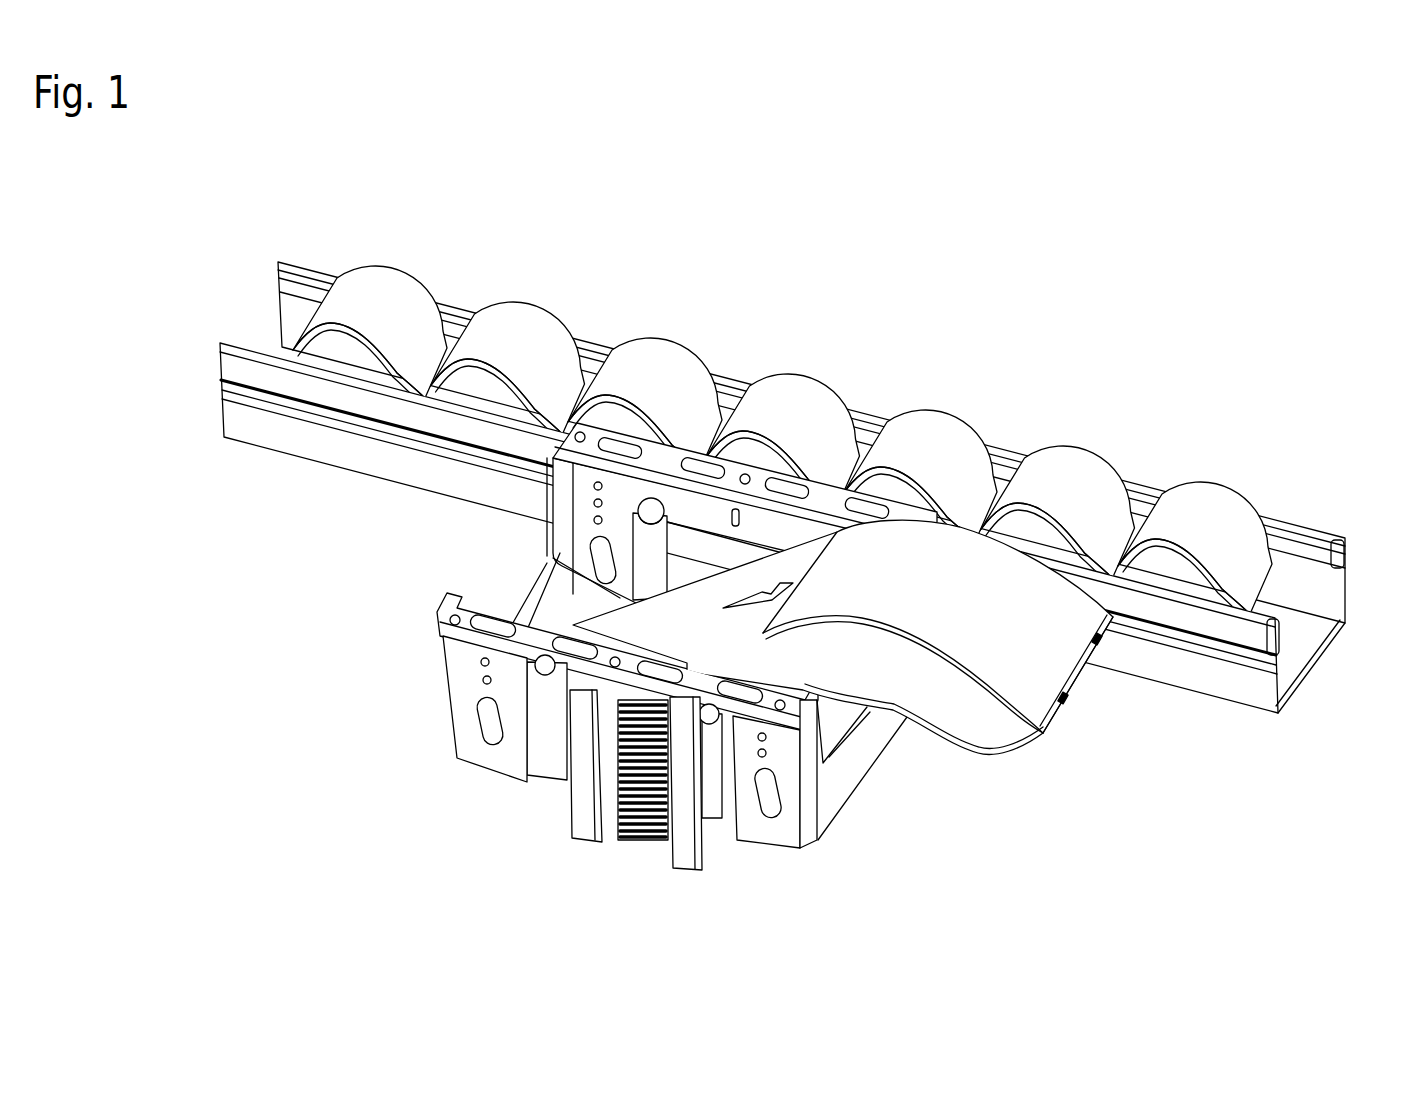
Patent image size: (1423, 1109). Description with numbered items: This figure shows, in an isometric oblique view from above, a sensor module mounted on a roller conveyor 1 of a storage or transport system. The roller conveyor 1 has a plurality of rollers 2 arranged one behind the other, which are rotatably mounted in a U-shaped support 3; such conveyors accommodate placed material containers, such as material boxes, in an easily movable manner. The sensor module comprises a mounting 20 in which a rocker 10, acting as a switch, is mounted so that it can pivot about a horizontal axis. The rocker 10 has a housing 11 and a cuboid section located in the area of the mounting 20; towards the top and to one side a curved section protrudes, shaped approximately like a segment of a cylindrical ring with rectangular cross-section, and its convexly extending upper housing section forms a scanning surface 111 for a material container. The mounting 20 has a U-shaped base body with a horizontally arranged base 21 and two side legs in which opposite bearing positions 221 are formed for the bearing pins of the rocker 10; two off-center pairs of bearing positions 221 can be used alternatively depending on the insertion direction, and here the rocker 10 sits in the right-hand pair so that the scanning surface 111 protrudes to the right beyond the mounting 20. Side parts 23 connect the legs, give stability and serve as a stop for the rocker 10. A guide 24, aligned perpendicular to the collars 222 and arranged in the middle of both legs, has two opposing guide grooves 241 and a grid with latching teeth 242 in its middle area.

The roller conveyor 1 is at (1362, 503).
The rollers 2 is at (511, 343).
The U-shaped support 3 is at (1303, 653).
The rocker 10 is at (868, 703).
The housing 11 is at (927, 687).
The scanning surface 111 is at (1037, 645).
The mounting 20 is at (751, 627).
The base 21 is at (840, 850).
The side parts 23 is at (543, 607).
The guide 24 is at (598, 836).
The bearing positions 221 is at (543, 665).
The collars 222 is at (662, 463).
The guide grooves 241 is at (585, 828).
The latching teeth 242 is at (643, 820).